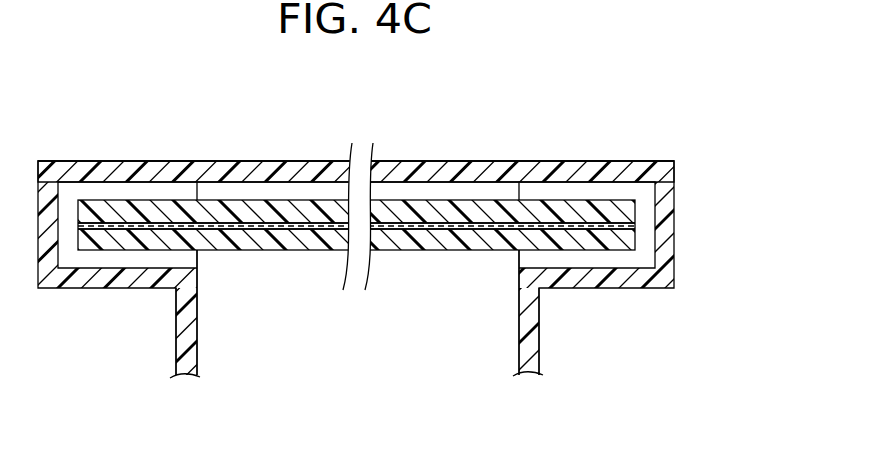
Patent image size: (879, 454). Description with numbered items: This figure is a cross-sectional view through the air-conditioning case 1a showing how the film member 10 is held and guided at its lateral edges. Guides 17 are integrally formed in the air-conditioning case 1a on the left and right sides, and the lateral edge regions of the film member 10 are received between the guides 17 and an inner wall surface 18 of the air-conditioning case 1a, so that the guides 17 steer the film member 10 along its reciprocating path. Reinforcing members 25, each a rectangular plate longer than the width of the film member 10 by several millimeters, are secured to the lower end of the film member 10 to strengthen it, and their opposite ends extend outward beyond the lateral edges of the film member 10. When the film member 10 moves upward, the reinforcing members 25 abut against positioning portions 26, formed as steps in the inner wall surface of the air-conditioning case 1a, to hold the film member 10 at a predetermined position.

The guides 17 is at (110, 272).
The inner wall surface 18 is at (606, 178).
The air-conditioning case 1a is at (548, 168).
The positioning portions 26 is at (200, 258).
The reinforcing members 25 is at (428, 207).
The film member 10 is at (491, 226).